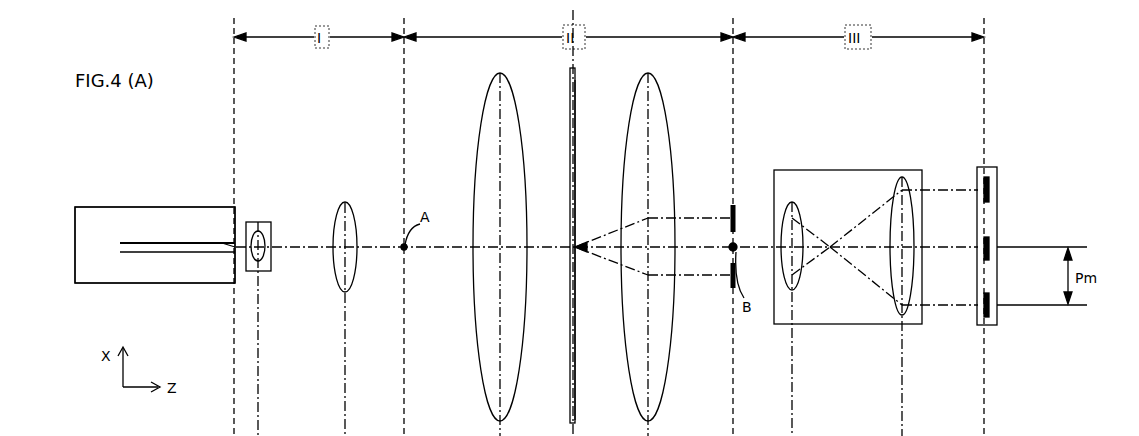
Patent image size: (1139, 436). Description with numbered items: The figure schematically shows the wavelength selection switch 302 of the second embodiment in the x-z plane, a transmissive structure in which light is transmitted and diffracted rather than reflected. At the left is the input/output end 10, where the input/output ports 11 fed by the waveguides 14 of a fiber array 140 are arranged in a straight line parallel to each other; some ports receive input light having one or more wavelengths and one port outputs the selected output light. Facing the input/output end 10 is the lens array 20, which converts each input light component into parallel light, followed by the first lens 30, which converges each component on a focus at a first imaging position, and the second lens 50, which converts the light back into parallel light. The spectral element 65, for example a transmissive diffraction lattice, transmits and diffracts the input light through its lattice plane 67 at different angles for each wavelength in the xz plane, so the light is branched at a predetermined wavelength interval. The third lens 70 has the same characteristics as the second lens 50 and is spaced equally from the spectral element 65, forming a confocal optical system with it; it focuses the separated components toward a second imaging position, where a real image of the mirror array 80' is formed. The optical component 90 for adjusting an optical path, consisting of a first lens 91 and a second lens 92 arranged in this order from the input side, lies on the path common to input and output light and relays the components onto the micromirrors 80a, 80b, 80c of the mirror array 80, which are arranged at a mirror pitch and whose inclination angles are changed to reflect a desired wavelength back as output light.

The input/output end 10 is at (236, 284).
The input/output ports 11 is at (227, 243).
The waveguides 14 is at (128, 242).
The fiber array 140 is at (164, 207).
The lens array 20 is at (260, 222).
The first lens 30 is at (347, 203).
The second lens 50 is at (485, 102).
The spectral element 65 is at (570, 100).
The lattice plane 67 is at (569, 126).
The third lens 70 is at (667, 101).
The mirror array of the real image 80' is at (751, 235).
The mirror array 80 is at (1007, 254).
The micromirror 80a is at (990, 184).
The micromirror 80b is at (990, 241).
The micromirror 80c is at (990, 301).
The optical component for adjusting an optical path 90 is at (814, 325).
The first lens for adjusting an optical path 91 is at (796, 287).
The second lens for adjusting an optical path 92 is at (908, 313).
The wavelength selection switch 302 is at (1036, 72).